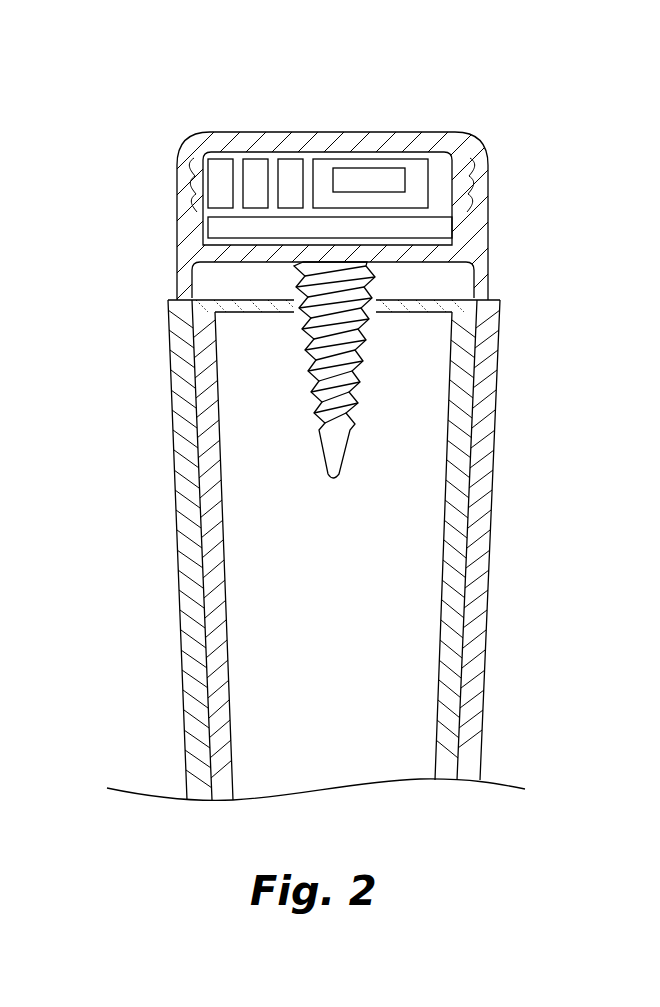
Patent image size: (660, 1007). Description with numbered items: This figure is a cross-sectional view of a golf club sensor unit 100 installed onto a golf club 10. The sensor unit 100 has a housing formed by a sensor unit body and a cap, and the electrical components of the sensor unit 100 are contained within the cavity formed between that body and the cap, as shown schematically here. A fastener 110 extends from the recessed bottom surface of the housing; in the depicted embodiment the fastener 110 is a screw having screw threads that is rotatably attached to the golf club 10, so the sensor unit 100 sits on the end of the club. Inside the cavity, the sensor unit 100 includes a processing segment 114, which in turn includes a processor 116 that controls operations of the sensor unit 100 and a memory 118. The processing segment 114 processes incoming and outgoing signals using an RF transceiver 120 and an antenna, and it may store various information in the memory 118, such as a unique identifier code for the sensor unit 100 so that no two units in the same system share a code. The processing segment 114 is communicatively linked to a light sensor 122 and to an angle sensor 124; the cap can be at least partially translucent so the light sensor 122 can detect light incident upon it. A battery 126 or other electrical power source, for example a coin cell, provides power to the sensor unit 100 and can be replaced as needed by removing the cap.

The golf club 10 is at (488, 602).
The golf club sensor unit 100 is at (488, 230).
The fastener 110 is at (363, 382).
The processing segment 114 is at (383, 166).
The processor 116 is at (428, 183).
The memory 118 is at (406, 182).
The RF transceiver 120 is at (216, 156).
The light sensor 122 is at (255, 158).
The angle sensor 124 is at (290, 158).
The battery 126 is at (207, 223).